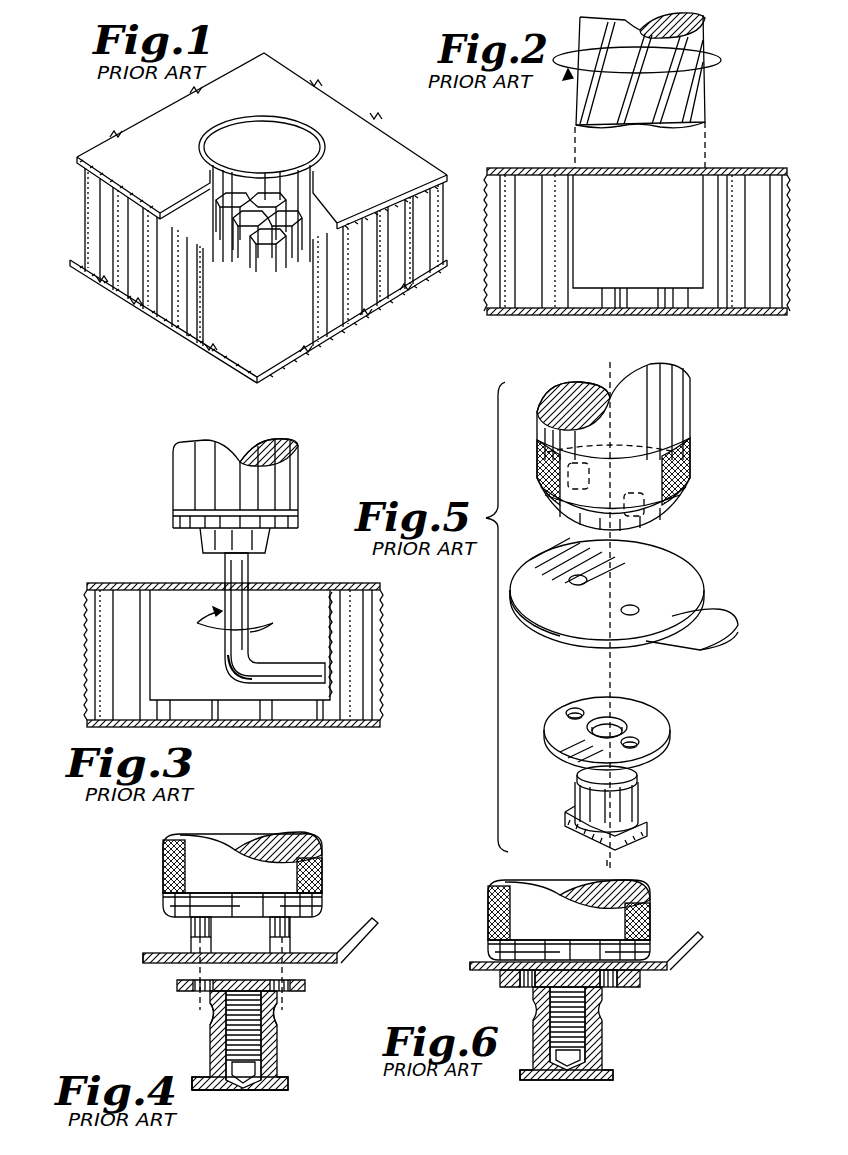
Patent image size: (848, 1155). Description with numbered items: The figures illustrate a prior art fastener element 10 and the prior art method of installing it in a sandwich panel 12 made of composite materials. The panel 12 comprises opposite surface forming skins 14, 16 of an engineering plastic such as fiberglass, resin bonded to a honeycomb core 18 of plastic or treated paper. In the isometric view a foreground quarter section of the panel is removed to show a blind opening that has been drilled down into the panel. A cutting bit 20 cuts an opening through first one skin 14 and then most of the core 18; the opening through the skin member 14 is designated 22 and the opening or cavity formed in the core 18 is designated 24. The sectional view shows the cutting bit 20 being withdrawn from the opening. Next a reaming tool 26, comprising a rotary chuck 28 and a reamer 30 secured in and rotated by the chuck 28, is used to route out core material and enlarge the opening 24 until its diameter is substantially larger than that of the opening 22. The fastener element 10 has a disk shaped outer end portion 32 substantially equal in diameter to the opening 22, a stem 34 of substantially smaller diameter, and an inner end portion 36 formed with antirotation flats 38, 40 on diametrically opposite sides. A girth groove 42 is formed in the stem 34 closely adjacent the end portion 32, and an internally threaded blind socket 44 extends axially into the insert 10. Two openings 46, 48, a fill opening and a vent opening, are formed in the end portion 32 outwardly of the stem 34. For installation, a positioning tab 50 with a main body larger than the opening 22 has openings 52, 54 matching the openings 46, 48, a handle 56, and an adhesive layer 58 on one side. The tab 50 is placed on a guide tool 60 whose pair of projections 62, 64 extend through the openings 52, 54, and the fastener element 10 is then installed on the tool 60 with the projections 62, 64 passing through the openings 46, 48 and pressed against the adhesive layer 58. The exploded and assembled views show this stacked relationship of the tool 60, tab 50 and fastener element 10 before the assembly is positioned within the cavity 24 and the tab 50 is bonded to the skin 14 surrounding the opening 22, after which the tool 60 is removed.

In FIG. 5, the fastener element 10 is at (638, 608).
In FIG. 4, the fastener element 10 is at (239, 974).
In FIG. 6, the fastener element 10 is at (598, 996).
In FIG. 1, the sandwich panel 12 is at (163, 331).
In FIG. 2, the sandwich panel 12 is at (508, 325).
In FIG. 1, the skin 14 is at (382, 136).
In FIG. 2, the skin 14 is at (757, 168).
In FIG. 3, the skin 14 is at (95, 583).
In FIG. 1, the skin layer 16 is at (422, 296).
In FIG. 2, the skin layer 16 is at (748, 315).
In FIG. 3, the skin layer 16 is at (237, 727).
In FIG. 1, the honeycomb core 18 is at (350, 275).
In FIG. 2, the honeycomb core 18 is at (530, 300).
In FIG. 3, the honeycomb core 18 is at (137, 583).
In FIG. 2, the cutting bit 20 is at (703, 118).
In FIG. 1, the opening 22 is at (288, 118).
In FIG. 3, the opening 22 is at (288, 583).
In FIG. 2, the cavity 24 is at (578, 222).
In FIG. 3, the cavity 24 is at (330, 600).
In FIG. 3, the reaming tool 26 is at (218, 602).
In FIG. 3, the rotary chuck 28 is at (288, 482).
In FIG. 3, the reamer 30 is at (290, 680).
In FIG. 5, the outer end portion 32 is at (637, 715).
In FIG. 4, the outer end portion 32 is at (229, 979).
In FIG. 6, the outer end portion 32 is at (591, 994).
In FIG. 5, the stem 34 is at (611, 799).
In FIG. 4, the stem 34 is at (221, 1054).
In FIG. 6, the stem 34 is at (571, 1049).
In FIG. 5, the inner end portion 36 is at (640, 838).
In FIG. 4, the inner end portion 36 is at (240, 1090).
In FIG. 5, the antirotation flat 38 is at (585, 828).
In FIG. 4, the antirotation flat 38 is at (192, 1075).
In FIG. 6, the antirotation flat 38 is at (494, 1091).
In FIG. 5, the antirotation flat 40 is at (625, 821).
In FIG. 4, the antirotation flat 40 is at (248, 1079).
In FIG. 6, the antirotation flat 40 is at (571, 1086).
In FIG. 5, the girth groove 42 is at (585, 782).
In FIG. 4, the girth groove 42 is at (280, 1013).
In FIG. 5, the internally threaded blind socket 44 is at (620, 715).
In FIG. 4, the internally threaded blind socket 44 is at (230, 1025).
In FIG. 6, the internally threaded blind socket 44 is at (575, 1025).
In FIG. 5, the fill opening 46 is at (575, 708).
In FIG. 4, the fill opening 46 is at (200, 1000).
In FIG. 5, the vent opening 48 is at (640, 742).
In FIG. 4, the vent opening 48 is at (283, 990).
In FIG. 5, the positioning tab 50 is at (638, 619).
In FIG. 4, the positioning tab 50 is at (239, 927).
In FIG. 6, the positioning tab 50 is at (598, 950).
In FIG. 5, the tab opening 52 is at (569, 580).
In FIG. 4, the tab opening 52 is at (195, 953).
In FIG. 5, the tab opening 54 is at (640, 610).
In FIG. 4, the tab opening 54 is at (292, 953).
In FIG. 5, the handle 56 is at (712, 638).
In FIG. 4, the handle 56 is at (378, 921).
In FIG. 6, the handle 56 is at (703, 935).
In FIG. 5, the adhesive layer 58 is at (520, 640).
In FIG. 4, the adhesive layer 58 is at (143, 960).
In FIG. 6, the adhesive layer 58 is at (485, 968).
In FIG. 5, the guide tool 60 is at (680, 455).
In FIG. 4, the guide tool 60 is at (238, 921).
In FIG. 6, the guide tool 60 is at (650, 912).
In FIG. 4, the projection 62 is at (200, 928).
In FIG. 6, the projection 62 is at (527, 987).
In FIG. 4, the projection 64 is at (292, 930).
In FIG. 6, the projection 64 is at (615, 987).